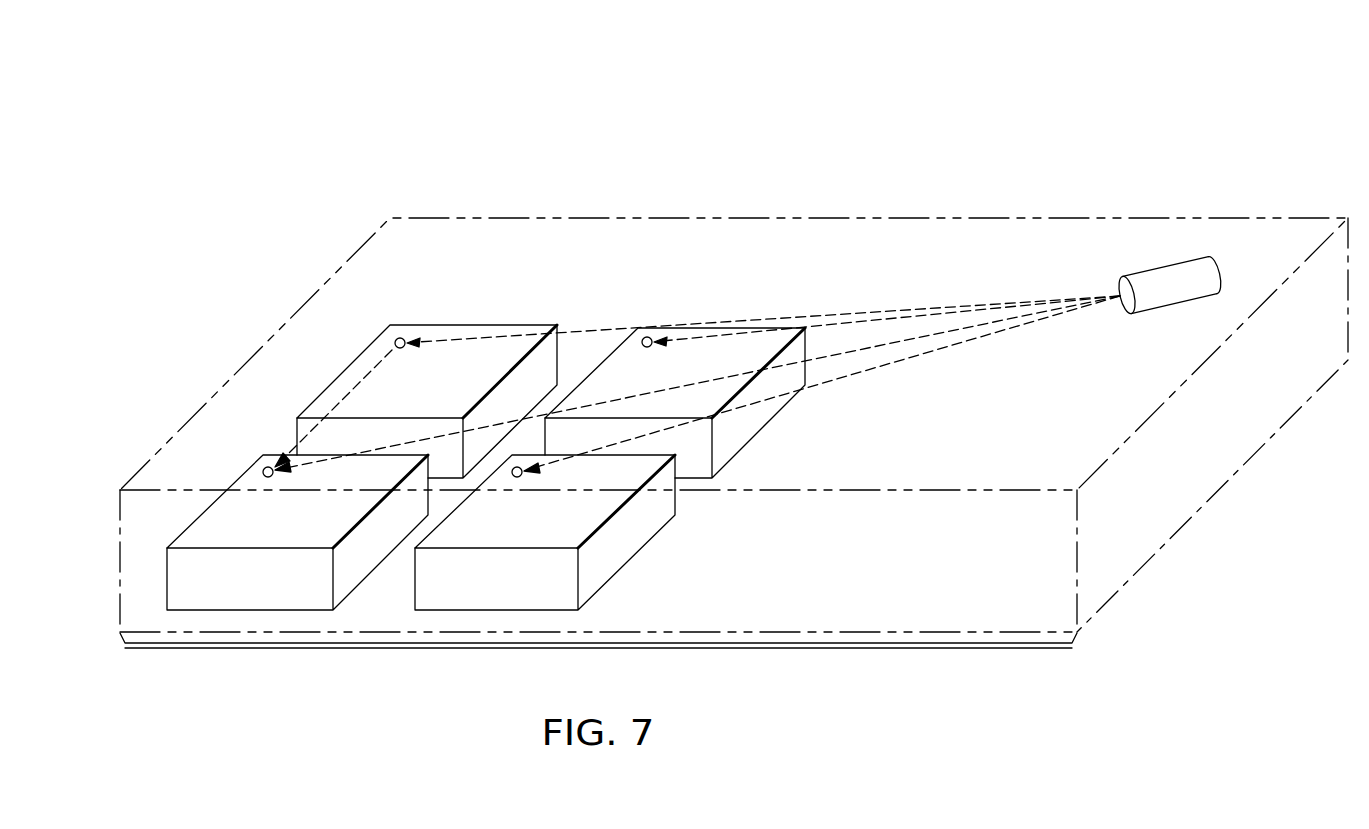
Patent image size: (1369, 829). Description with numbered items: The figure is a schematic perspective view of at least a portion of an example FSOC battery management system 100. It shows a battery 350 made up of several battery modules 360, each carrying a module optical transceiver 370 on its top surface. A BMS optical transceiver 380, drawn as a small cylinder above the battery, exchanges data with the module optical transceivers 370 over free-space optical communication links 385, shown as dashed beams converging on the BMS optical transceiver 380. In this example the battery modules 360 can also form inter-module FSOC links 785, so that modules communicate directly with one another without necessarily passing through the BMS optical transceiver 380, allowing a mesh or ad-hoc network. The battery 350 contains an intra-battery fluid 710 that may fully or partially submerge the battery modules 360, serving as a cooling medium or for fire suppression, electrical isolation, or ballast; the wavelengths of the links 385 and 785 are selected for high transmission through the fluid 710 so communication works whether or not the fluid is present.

The FSOC battery management system 100 is at (270, 131).
The battery 350 is at (592, 650).
The battery modules 360 is at (466, 322).
The module optical transceivers 370 is at (396, 339).
The BMS optical transceiver 380 is at (1157, 268).
The communication links 385 is at (603, 327).
The intra-battery fluid 710 is at (1217, 493).
The inter-module FSOC links 785 is at (347, 392).